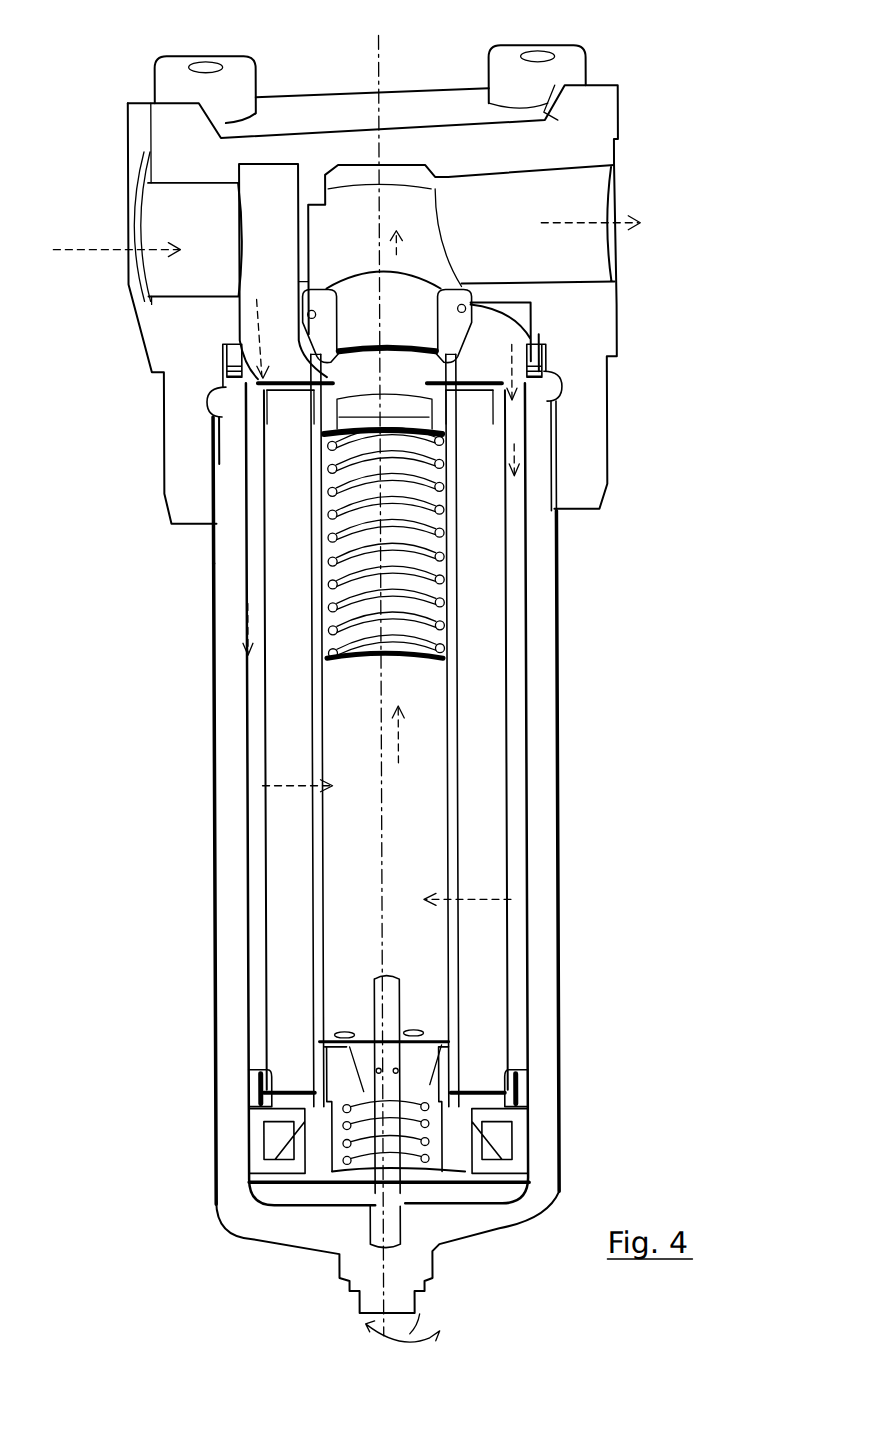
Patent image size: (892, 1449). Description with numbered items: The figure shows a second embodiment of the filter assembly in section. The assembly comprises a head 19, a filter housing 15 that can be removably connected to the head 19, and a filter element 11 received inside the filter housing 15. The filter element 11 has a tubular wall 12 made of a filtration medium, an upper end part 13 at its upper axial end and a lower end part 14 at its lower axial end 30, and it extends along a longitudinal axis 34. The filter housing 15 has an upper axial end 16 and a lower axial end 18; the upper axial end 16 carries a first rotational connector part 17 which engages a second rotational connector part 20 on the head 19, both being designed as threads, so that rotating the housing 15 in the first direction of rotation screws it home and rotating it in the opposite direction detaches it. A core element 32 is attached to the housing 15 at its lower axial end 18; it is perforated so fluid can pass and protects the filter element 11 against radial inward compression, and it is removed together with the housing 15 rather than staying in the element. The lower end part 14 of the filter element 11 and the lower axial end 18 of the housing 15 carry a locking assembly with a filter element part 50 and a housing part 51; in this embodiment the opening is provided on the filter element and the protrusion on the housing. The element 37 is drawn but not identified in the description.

The filter element 11 is at (527, 714).
The tubular wall 12 is at (483, 838).
The upper end part 13 is at (500, 365).
The lower end part 14 is at (513, 1104).
The filter housing 15 is at (535, 865).
The upper axial end 16 is at (530, 448).
The first rotational connector part 17 is at (220, 487).
The lower axial end 18 is at (240, 1208).
The head 19 is at (590, 108).
The second rotational connector part 20 is at (215, 460).
The lower axial end 30 is at (513, 1106).
The core element 32 is at (450, 670).
The longitudinal axis 34 is at (378, 50).
The central tube 37 is at (413, 803).
The filter element part of the locking assembly 50 is at (263, 1075).
The housing part of the locking assembly 51 is at (263, 1177).